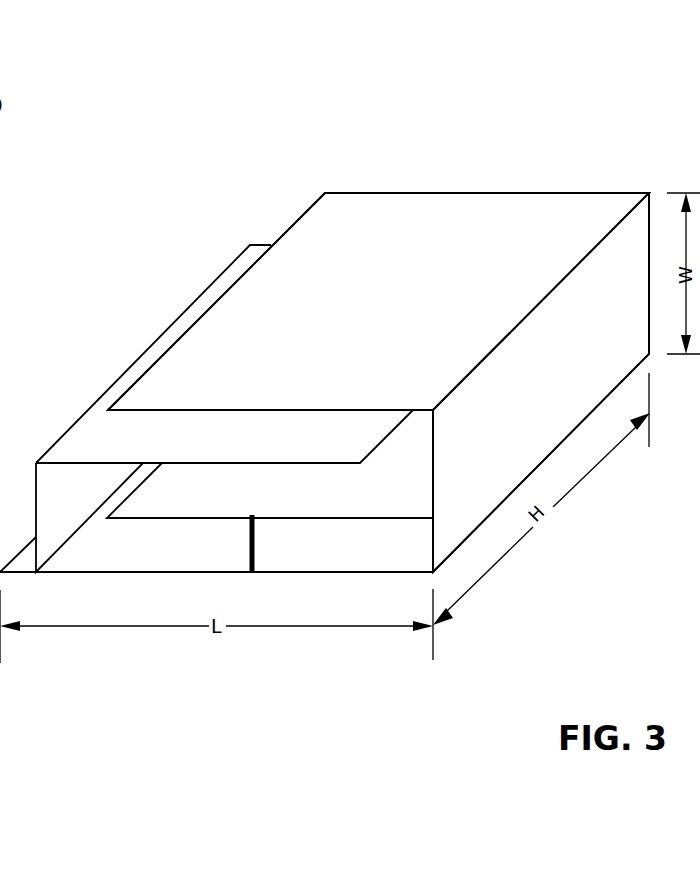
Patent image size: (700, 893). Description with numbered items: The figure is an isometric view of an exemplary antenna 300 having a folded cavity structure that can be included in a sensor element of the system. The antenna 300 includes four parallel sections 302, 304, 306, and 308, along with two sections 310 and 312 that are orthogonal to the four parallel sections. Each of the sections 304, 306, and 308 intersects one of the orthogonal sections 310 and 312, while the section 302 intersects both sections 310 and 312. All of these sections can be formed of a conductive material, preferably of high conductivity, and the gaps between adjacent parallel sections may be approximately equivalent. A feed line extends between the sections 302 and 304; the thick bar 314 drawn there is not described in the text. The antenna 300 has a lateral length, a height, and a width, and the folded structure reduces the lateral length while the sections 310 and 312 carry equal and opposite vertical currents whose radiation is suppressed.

The antenna 300 is at (461, 92).
The parallel section 302 is at (165, 556).
The parallel section 304 is at (345, 504).
The parallel section 306 is at (253, 450).
The parallel section 308 is at (435, 285).
The orthogonal section 310 is at (580, 395).
The orthogonal section 312 is at (91, 495).
The interface marker 314 is at (254, 557).